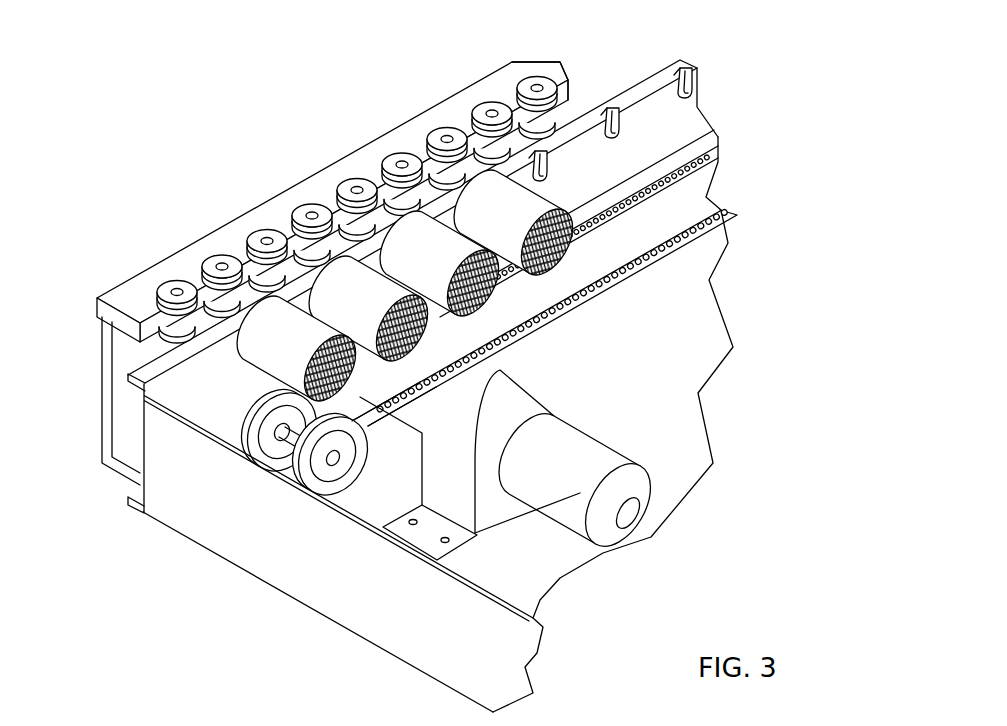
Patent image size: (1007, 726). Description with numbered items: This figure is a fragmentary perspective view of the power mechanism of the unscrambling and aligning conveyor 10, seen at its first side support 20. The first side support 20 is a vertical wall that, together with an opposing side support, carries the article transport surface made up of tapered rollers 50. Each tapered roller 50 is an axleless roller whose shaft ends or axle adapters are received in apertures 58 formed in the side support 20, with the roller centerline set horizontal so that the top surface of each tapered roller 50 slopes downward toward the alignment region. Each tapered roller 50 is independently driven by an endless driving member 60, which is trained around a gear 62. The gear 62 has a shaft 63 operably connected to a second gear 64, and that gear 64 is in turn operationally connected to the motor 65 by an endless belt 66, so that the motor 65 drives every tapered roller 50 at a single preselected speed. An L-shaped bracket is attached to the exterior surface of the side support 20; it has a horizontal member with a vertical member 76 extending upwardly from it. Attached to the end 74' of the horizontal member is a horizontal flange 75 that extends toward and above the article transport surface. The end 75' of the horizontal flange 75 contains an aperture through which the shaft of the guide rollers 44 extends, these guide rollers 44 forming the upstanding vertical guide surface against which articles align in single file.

The unscrambling and aligning conveyor 10 is at (790, 222).
The first side support 20 is at (163, 392).
The vertical guide surface 44 is at (446, 132).
The tapered roller 50 is at (405, 238).
The apertures 58 is at (692, 62).
The endless driving member 60 is at (718, 138).
The gear 62 is at (252, 443).
The shaft 63 is at (290, 447).
The gear 64 is at (318, 481).
The motor 65 is at (513, 380).
The endless belt 66 is at (385, 440).
The end of horizontal member 74' is at (99, 312).
The horizontal flange 75 is at (332, 202).
The end of horizontal flange 75' is at (504, 65).
The vertical member 76 is at (110, 375).